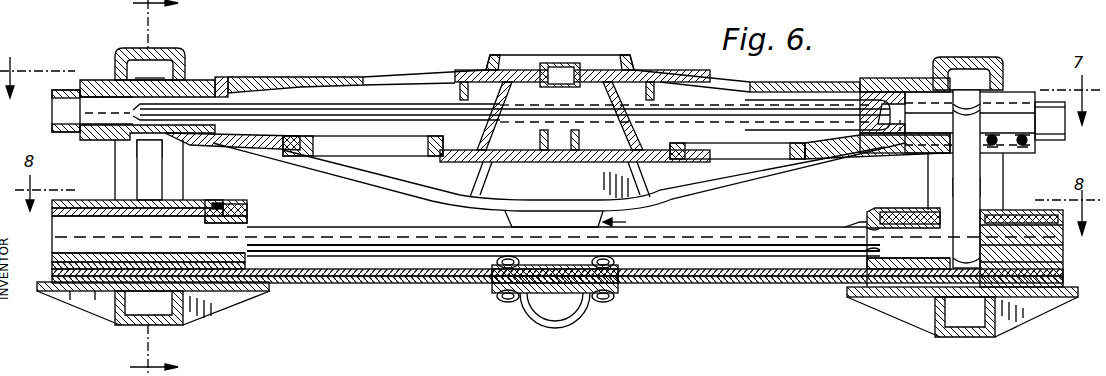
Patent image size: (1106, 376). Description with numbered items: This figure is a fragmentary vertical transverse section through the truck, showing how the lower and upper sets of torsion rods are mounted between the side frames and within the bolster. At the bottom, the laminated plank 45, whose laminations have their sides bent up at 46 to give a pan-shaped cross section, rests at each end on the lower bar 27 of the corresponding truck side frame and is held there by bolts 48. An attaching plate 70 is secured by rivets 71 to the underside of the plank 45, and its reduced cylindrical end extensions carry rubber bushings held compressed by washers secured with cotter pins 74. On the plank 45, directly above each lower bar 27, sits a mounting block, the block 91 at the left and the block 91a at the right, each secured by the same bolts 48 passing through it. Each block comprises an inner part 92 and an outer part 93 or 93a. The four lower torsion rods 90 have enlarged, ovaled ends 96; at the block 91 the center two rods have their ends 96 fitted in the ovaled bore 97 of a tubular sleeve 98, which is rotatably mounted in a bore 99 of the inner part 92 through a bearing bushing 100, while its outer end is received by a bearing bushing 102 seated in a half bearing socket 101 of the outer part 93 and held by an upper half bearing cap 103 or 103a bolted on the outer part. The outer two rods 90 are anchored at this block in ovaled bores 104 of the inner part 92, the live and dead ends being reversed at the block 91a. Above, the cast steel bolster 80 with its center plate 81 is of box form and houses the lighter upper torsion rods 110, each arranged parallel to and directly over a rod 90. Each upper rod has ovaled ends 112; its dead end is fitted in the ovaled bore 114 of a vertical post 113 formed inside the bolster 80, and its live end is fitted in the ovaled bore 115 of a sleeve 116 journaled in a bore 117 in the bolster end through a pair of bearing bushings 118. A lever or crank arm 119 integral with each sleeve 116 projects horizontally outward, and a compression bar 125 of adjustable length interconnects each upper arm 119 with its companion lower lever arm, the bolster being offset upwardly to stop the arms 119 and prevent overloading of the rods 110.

The lower bars 27 is at (152, 326).
The plank 45 is at (368, 290).
The bent up sides 46 is at (795, 236).
The bolts 48 is at (1000, 148).
The attaching plate 70 is at (553, 321).
The rivets 71 is at (512, 301).
The cotter pins 74 is at (625, 222).
The bolster 80 is at (368, 76).
The center plate 81 is at (634, 66).
The lower torsion rods 90 is at (350, 229).
The block 91 is at (240, 203).
The block 91a is at (893, 204).
The inner part 92 is at (247, 209).
The outer part 93 is at (44, 293).
The outer part 93a is at (1040, 300).
The ends 96 is at (493, 236).
The ovaled bore 97 is at (247, 221).
The tubular sleeve 98 is at (252, 256).
The bore 99 is at (232, 198).
The bearing bushing 100 is at (246, 292).
The half bearing socket 101 is at (95, 291).
The bearing bushing 102 is at (70, 292).
The upper half bearing cap 103 is at (100, 198).
The upper half bearing cap 103a is at (1005, 212).
The ovaled bores 104 is at (868, 231).
The upper torsion rod 110 is at (421, 107).
The ends 112 is at (112, 80).
The vertical post 113 is at (882, 92).
The ovaled bore 114 is at (848, 113).
The ovaled bore 115 is at (262, 79).
The sleeve 116 is at (292, 79).
The bore 117 is at (305, 140).
The bearing bushings 118 is at (222, 78).
The lever or crank arm 119 is at (152, 72).
The compression bar 125 is at (165, 170).